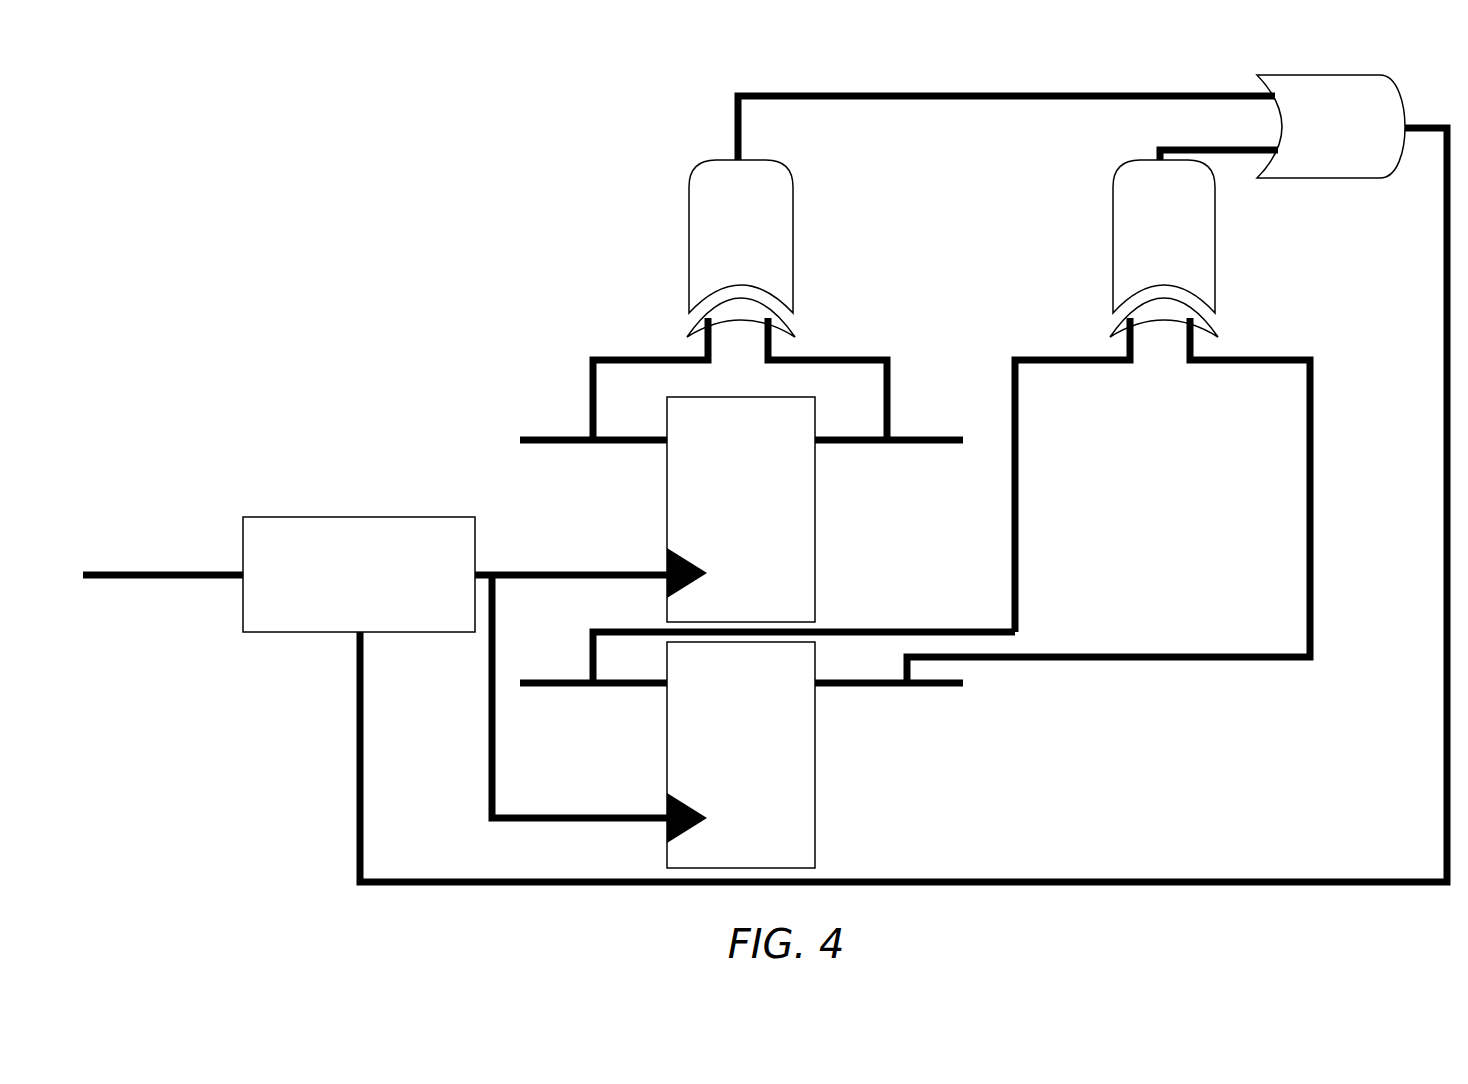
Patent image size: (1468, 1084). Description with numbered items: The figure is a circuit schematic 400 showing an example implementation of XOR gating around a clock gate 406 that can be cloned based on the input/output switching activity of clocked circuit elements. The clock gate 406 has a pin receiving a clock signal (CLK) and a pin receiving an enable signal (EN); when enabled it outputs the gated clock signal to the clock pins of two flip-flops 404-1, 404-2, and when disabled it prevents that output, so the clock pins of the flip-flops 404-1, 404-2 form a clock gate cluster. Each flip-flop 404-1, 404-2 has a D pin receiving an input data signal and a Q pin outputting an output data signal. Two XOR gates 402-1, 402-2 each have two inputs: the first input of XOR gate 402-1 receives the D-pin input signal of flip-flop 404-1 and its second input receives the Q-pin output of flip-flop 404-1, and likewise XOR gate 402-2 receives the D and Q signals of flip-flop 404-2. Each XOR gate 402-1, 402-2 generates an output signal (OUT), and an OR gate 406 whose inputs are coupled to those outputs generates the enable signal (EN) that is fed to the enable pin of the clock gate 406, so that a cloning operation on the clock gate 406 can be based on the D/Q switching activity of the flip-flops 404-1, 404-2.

The circuit schematic 400 is at (290, 130).
The XOR gate 402-1 is at (793, 245).
The XOR gate 402-2 is at (1215, 240).
The flip-flop 404-1 is at (815, 551).
The flip-flop 404-2 is at (815, 784).
The clock gate 406 is at (475, 530).